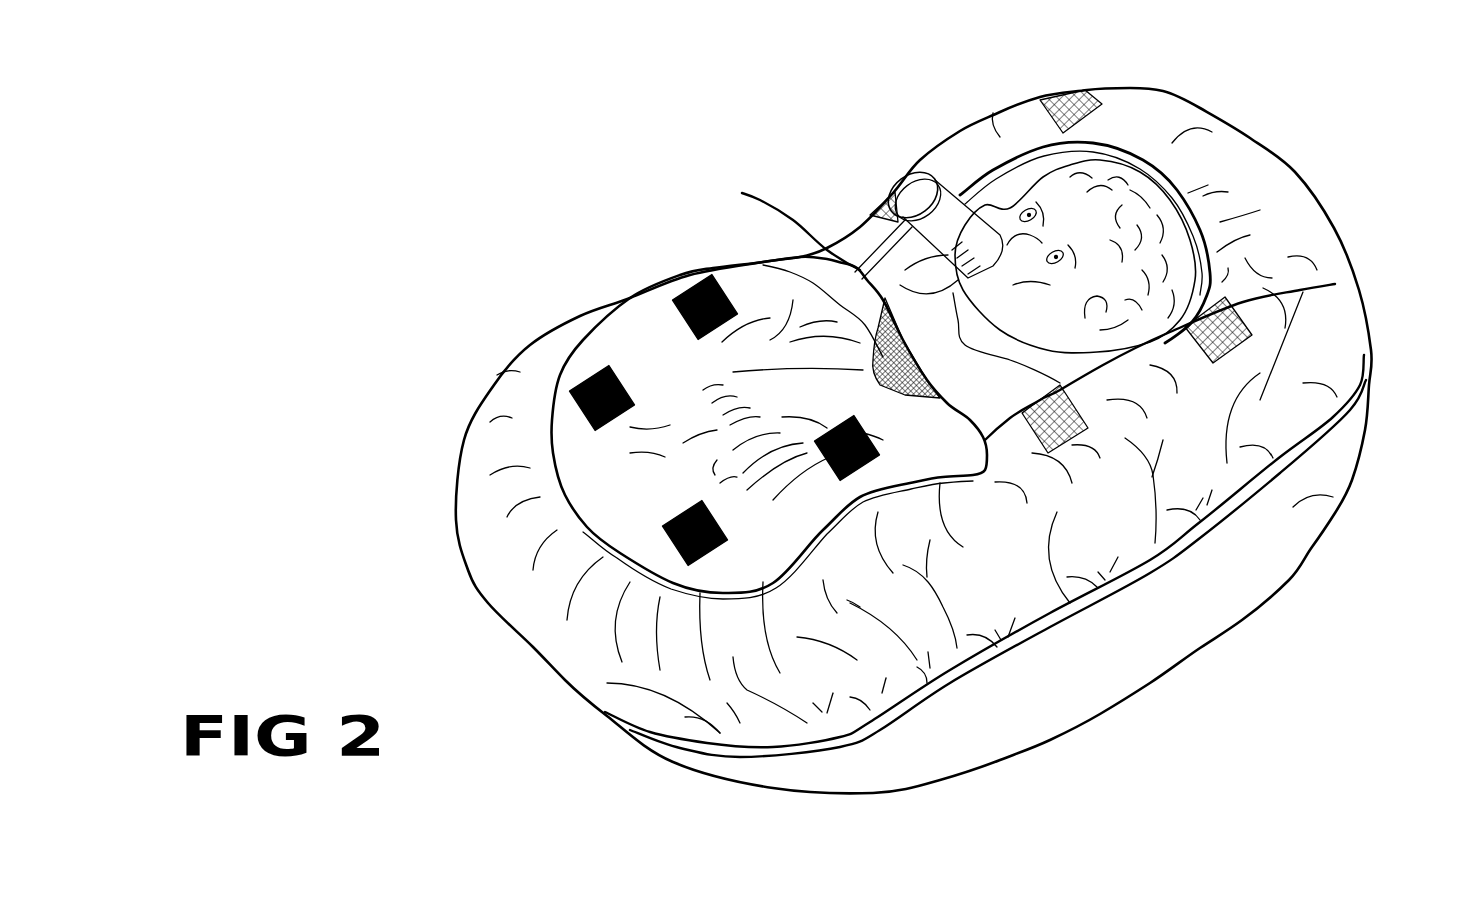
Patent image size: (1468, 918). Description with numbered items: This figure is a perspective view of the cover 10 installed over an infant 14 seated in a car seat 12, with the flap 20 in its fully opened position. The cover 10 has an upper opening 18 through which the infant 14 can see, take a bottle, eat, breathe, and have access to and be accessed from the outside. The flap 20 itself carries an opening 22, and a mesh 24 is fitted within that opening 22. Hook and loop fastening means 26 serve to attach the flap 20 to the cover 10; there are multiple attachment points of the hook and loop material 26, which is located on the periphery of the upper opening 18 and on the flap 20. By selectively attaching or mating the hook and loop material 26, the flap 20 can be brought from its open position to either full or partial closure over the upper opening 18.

The cover 10 is at (1225, 178).
The car seat 12 is at (1298, 508).
The infant 14 is at (1070, 190).
The upper opening 18 is at (997, 187).
The flap 20 is at (663, 322).
The opening 22 is at (853, 228).
The mesh 24 is at (813, 283).
The hook and loop fastening means 26 is at (587, 382).